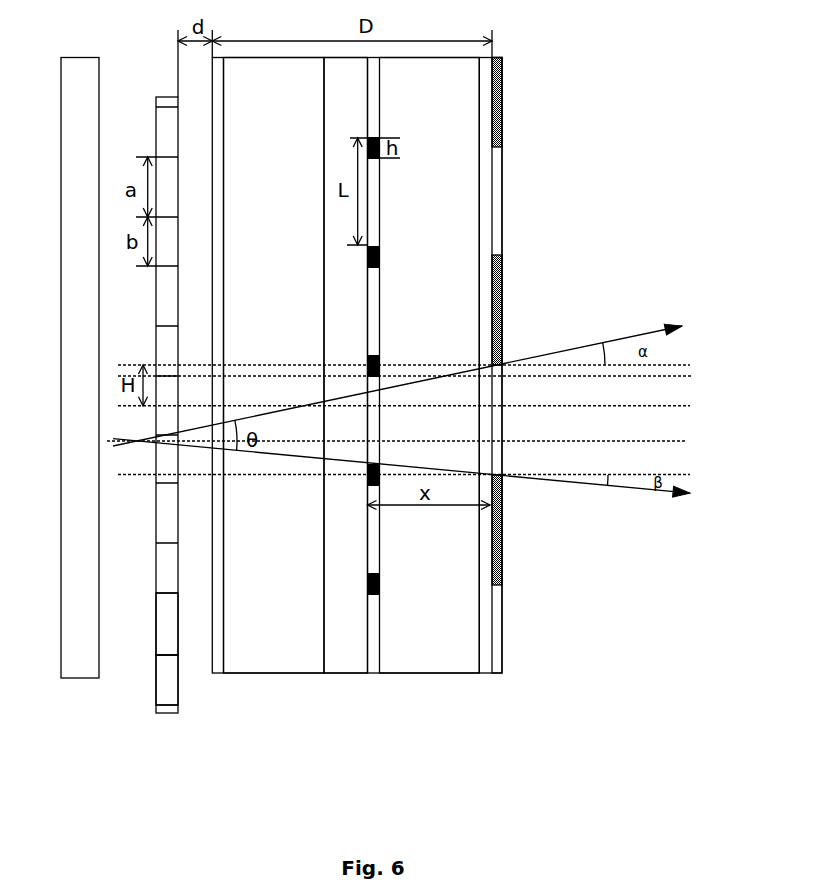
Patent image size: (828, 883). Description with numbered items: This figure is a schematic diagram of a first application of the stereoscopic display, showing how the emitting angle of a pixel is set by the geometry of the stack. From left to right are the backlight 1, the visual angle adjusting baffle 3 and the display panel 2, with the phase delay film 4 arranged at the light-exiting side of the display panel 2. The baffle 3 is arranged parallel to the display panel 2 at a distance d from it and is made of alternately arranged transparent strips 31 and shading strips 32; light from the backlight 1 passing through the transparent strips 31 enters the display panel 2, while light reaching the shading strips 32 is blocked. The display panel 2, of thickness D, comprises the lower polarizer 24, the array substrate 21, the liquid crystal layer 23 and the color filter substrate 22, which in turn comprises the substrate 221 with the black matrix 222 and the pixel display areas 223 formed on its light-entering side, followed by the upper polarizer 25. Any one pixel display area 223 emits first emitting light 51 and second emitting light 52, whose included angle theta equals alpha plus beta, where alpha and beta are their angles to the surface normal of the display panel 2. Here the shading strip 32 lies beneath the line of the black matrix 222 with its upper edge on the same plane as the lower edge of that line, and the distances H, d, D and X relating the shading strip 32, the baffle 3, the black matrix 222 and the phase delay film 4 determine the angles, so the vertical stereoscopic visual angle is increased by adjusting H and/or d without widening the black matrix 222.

The backlight 1 is at (77, 668).
The display panel 2 is at (388, 440).
The array substrate 21 is at (275, 667).
The color filter substrate 22 is at (430, 415).
The substrate 221 is at (372, 723).
The black matrix 222 is at (380, 585).
The pixel display area 223 is at (372, 665).
The liquid crystal layer 23 is at (331, 665).
The lower polarizer 24 is at (217, 668).
The upper polarizer 25 is at (483, 667).
The visual angle adjusting baffle 3 is at (141, 442).
The transparent strip 31 is at (172, 692).
The shading strip 32 is at (173, 633).
The phase delay film 4 is at (528, 413).
The first emitting light 51 is at (620, 332).
The second emitting light 52 is at (620, 498).